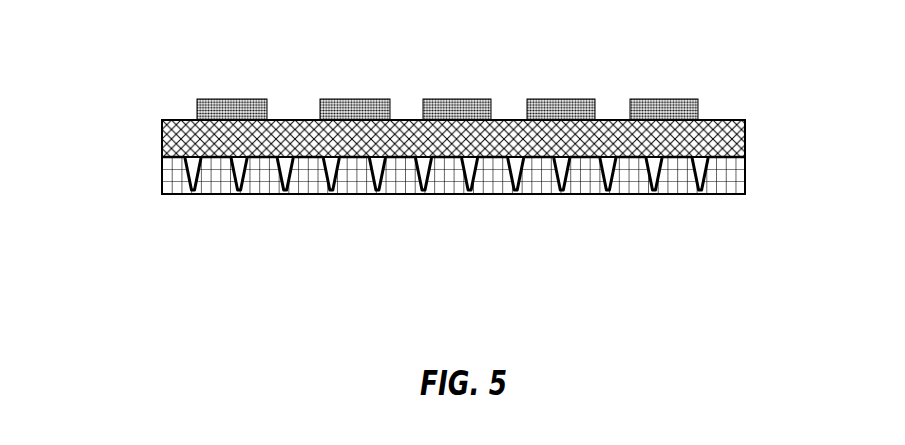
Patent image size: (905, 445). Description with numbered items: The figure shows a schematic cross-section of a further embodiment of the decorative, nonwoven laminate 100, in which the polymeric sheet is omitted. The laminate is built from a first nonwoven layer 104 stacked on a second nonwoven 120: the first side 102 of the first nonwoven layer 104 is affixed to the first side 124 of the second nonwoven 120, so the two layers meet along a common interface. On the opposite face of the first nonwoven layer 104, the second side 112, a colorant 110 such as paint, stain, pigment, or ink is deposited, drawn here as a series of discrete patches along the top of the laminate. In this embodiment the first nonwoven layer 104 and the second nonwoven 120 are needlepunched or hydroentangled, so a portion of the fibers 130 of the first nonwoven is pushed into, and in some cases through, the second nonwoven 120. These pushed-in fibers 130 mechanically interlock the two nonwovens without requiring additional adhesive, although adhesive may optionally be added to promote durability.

The decorative, nonwoven laminate 100 is at (421, 146).
The first side 102 is at (677, 157).
The first nonwoven layer 104 is at (162, 120).
The colorant 110 is at (663, 97).
The second side 112 is at (617, 118).
The second nonwoven 120 is at (177, 180).
The first side 124 is at (727, 157).
The fibers 130 is at (560, 163).